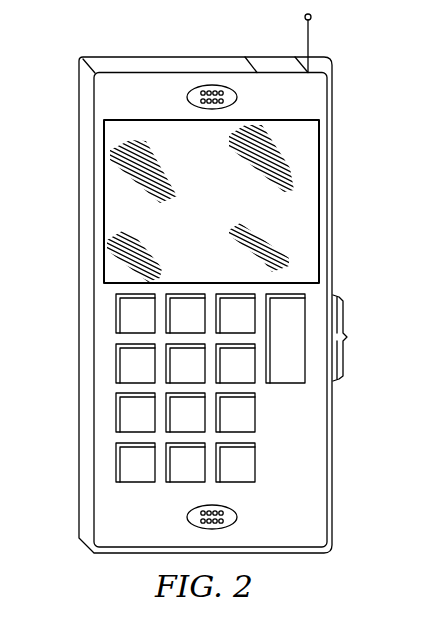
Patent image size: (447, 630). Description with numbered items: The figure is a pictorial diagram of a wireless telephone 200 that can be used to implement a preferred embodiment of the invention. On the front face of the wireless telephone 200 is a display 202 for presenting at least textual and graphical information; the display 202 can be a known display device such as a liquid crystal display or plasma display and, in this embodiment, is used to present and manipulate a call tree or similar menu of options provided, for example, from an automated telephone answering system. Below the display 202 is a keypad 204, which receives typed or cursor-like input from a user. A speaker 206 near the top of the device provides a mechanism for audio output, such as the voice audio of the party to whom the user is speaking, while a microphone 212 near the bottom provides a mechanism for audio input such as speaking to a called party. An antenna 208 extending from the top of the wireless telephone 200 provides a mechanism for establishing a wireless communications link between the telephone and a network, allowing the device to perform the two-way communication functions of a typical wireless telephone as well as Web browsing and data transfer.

The wireless telephone 200 is at (332, 97).
The display 202 is at (222, 210).
The keypad 204 is at (347, 338).
The speaker 206 is at (237, 97).
The antenna 208 is at (308, 42).
The microphone 212 is at (237, 517).